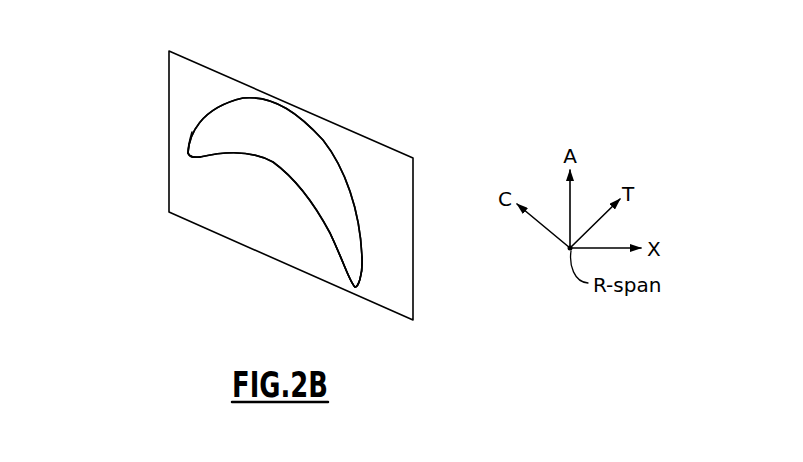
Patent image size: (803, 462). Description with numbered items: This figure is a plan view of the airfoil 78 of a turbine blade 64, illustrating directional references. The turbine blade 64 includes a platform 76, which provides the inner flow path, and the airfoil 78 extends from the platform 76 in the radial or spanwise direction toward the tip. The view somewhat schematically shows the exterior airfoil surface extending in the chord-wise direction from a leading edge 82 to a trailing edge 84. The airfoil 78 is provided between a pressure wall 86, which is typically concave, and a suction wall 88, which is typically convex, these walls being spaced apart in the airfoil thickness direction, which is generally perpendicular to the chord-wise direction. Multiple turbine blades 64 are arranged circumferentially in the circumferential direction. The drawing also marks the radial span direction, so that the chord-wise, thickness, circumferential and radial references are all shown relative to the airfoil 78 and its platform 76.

The turbine blade 64 is at (383, 96).
The platform 76 is at (223, 72).
The airfoil 78 is at (196, 162).
The leading edge 82 is at (188, 155).
The trailing edge 84 is at (355, 287).
The pressure wall 86 is at (283, 170).
The suction wall 88 is at (293, 108).